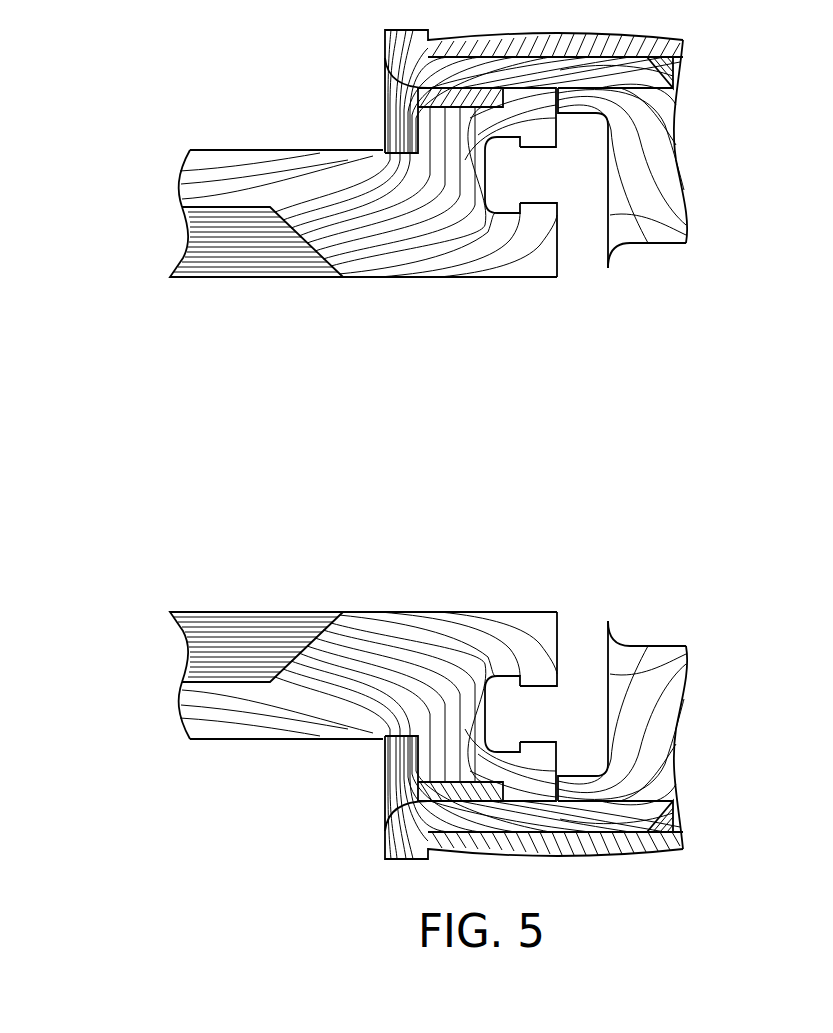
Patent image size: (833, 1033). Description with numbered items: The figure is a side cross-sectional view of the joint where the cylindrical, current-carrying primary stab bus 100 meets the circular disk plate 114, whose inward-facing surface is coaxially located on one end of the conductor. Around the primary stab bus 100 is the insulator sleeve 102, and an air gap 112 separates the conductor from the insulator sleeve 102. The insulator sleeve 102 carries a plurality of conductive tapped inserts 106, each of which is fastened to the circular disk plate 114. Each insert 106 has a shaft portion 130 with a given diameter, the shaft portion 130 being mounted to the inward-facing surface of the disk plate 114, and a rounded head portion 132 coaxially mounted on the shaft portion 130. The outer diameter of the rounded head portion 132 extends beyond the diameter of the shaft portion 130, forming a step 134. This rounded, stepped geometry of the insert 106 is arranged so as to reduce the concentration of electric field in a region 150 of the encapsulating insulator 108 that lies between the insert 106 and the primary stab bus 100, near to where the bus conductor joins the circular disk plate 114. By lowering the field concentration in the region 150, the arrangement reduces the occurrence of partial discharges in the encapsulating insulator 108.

The primary stab bus 100 is at (153, 275).
The insulator sleeve 102 is at (220, 188).
The tapped insert 106 is at (573, 172).
The encapsulating insulator 108 is at (463, 258).
The air gap 112 is at (213, 257).
The circular disk plate 114 is at (610, 215).
The shaft portion 130 is at (543, 187).
The rounded head portion 132 is at (497, 170).
The step 134 is at (523, 208).
The region 150 is at (505, 267).